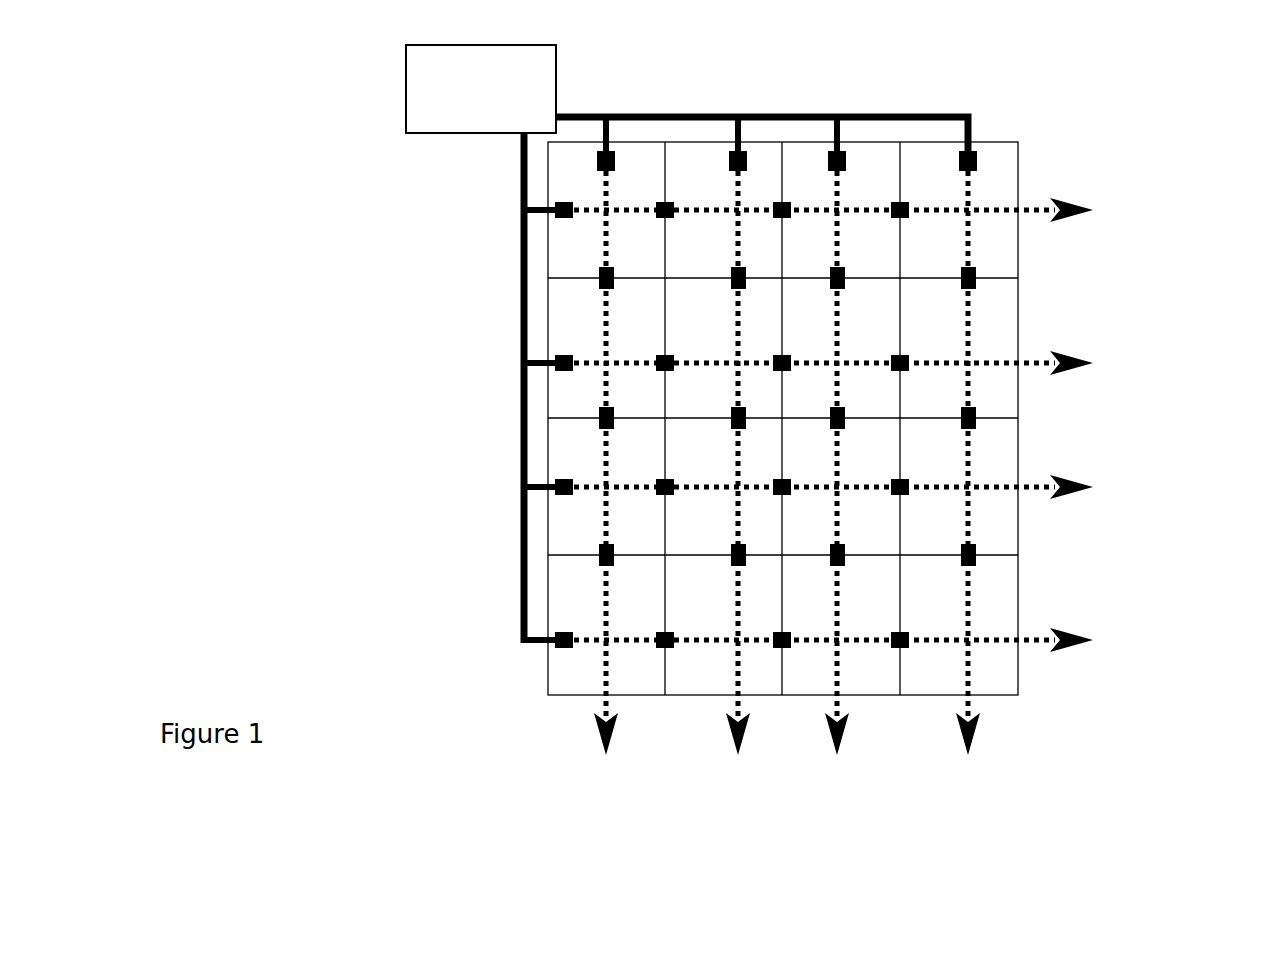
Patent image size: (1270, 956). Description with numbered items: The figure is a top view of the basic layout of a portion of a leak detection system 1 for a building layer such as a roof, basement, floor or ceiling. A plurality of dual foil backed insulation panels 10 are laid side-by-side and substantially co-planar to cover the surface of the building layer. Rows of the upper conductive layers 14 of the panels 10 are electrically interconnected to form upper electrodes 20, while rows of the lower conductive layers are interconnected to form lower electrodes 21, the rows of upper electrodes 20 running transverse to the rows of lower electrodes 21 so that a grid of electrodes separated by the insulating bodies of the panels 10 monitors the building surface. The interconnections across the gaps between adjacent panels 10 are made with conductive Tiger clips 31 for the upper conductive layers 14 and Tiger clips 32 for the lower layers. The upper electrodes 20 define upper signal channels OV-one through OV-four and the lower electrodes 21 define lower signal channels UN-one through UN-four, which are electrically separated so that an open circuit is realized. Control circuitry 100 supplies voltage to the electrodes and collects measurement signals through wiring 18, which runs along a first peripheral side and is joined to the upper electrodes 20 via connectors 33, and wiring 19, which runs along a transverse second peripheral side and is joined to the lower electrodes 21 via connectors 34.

The leak detection system 1 is at (395, 253).
The control circuitry 100 is at (481, 89).
The wiring 19 is at (667, 113).
The wiring 18 is at (520, 167).
The dual foil backed insulation panel 10 is at (830, 432).
The upper conductive layer 14 is at (1010, 167).
The Tiger clip 31 is at (792, 192).
The upper electrode 20 is at (1045, 193).
The lower electrode 21 is at (590, 713).
The Tiger clip 32 is at (988, 270).
The connector 34 is at (985, 153).
The connector 33 is at (556, 218).